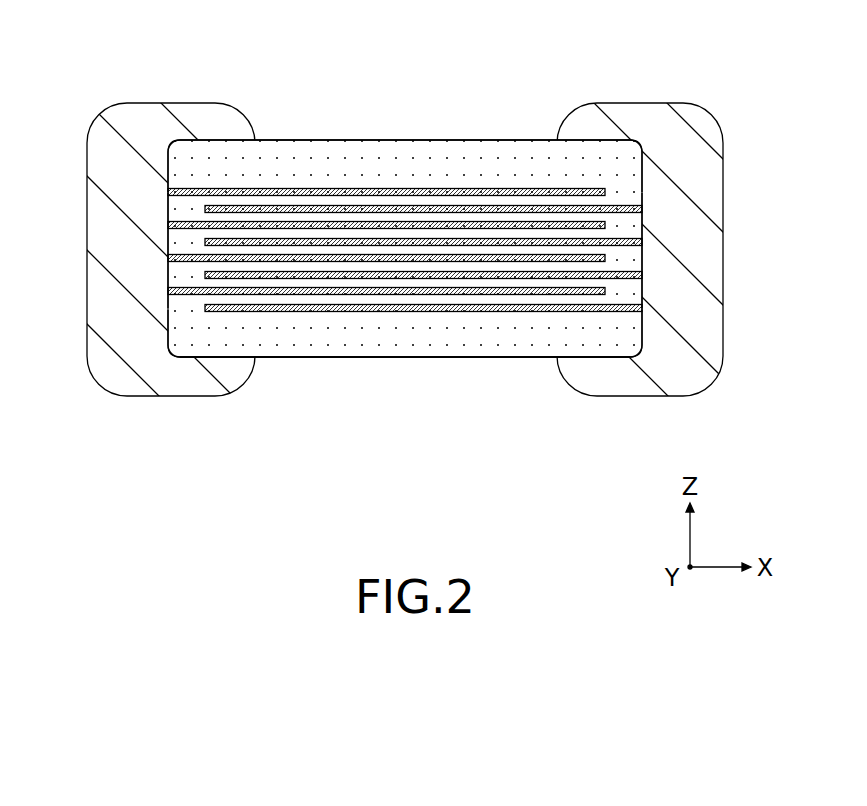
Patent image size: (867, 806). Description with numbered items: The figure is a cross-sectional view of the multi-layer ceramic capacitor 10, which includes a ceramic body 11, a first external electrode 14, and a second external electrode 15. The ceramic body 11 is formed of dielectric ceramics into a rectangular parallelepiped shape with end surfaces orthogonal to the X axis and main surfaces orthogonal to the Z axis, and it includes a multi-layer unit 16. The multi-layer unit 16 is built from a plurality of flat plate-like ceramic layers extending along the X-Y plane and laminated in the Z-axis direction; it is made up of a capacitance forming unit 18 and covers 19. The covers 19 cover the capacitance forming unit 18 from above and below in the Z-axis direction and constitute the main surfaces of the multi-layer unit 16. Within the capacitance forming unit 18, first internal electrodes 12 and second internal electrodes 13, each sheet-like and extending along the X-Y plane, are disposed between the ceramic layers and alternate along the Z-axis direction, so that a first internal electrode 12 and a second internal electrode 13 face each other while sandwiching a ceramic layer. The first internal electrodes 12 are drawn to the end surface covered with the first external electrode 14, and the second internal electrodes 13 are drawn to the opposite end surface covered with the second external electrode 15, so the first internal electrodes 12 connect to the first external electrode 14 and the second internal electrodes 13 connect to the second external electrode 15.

The multi-layer ceramic capacitor 10 is at (415, 268).
The ceramic body 11 is at (432, 236).
The first internal electrodes 12 is at (279, 288).
The second internal electrodes 13 is at (478, 307).
The first external electrode 14 is at (103, 240).
The second external electrode 15 is at (723, 239).
The multi-layer unit 16 is at (380, 344).
The capacitance forming unit 18 is at (647, 194).
The covers 19 is at (647, 139).